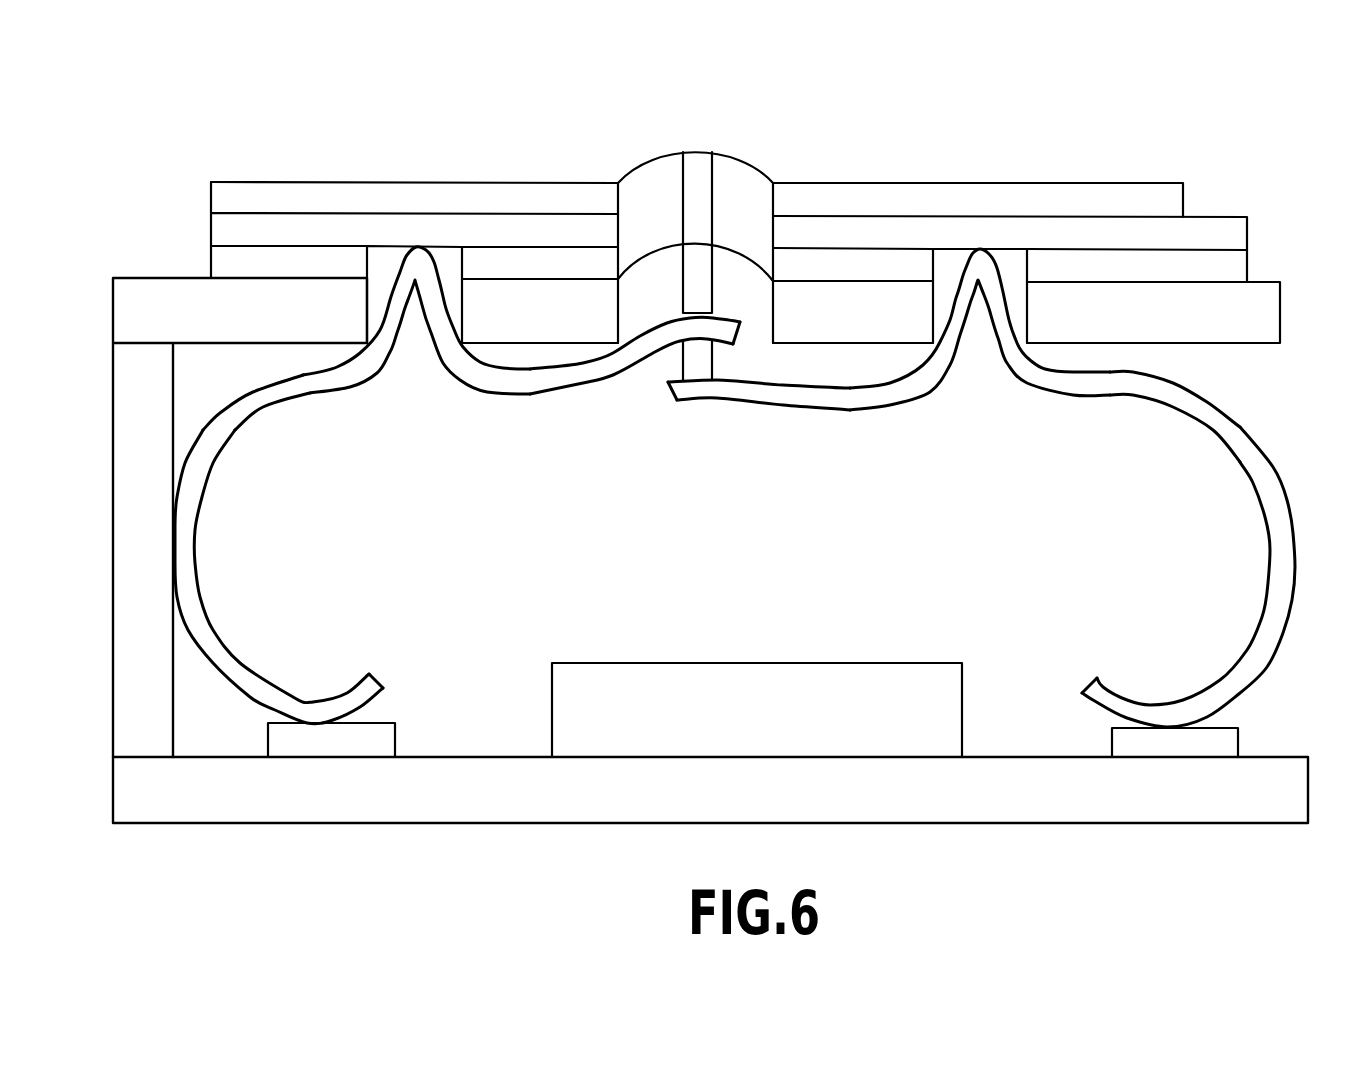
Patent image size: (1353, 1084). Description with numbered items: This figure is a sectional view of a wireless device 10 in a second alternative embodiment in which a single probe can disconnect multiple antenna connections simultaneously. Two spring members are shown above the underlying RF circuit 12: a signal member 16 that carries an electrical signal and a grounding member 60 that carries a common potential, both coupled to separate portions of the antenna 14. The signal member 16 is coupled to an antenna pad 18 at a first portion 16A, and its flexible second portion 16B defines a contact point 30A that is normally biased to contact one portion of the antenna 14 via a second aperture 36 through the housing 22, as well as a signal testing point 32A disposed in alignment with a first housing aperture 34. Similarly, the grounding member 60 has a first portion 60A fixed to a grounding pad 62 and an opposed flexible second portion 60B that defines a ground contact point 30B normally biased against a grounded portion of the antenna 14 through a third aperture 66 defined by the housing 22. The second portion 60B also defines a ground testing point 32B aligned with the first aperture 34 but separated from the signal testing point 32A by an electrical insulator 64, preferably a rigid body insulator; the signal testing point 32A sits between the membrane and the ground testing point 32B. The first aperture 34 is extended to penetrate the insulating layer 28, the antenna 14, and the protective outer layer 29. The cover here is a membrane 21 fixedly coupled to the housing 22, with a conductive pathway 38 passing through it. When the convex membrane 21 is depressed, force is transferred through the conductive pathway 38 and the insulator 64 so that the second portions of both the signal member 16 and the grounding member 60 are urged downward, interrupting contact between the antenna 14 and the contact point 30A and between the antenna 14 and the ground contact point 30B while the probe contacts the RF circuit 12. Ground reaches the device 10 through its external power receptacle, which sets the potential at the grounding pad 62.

The device 10 is at (190, 122).
The RF circuit 12 is at (782, 670).
The antenna 14 is at (1230, 225).
The signal member 16 is at (192, 538).
The first portion 16A is at (357, 657).
The flexible second portion 16B is at (523, 420).
The antenna pad 18 is at (392, 742).
The membrane 21 is at (648, 166).
The housing 22 is at (120, 423).
The insulating layer 28 is at (1240, 273).
The protective outer layer 29 is at (1183, 197).
The contact point 30A is at (415, 250).
The ground contact point 30B is at (980, 262).
The signal testing point 32A is at (742, 327).
The ground testing point 32B is at (683, 395).
The first housing aperture 34 is at (741, 305).
The second aperture 36 is at (377, 287).
The conductive pathway 38 is at (699, 157).
The grounding member 60 is at (1283, 527).
The first portion 60A is at (1205, 660).
The flexible second portion 60B is at (1083, 422).
The grounding pad 62 is at (1113, 745).
The electrical insulator 64 is at (692, 358).
The third aperture 66 is at (1015, 283).